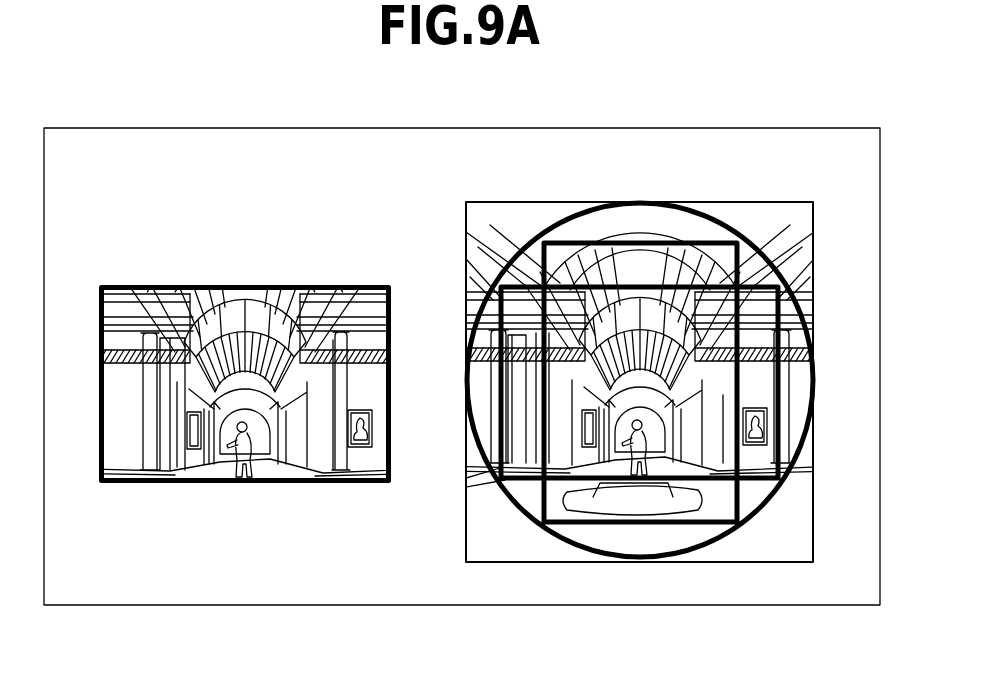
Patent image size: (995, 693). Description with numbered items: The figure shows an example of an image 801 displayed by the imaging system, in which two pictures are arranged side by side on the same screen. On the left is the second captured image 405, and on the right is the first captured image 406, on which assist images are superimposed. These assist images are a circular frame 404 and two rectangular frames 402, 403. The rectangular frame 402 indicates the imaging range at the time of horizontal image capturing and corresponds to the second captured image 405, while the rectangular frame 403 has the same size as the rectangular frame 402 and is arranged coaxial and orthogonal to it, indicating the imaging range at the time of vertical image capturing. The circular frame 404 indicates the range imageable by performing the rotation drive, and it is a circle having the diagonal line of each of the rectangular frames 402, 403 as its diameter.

The image 801 is at (445, 128).
The second captured image 405 is at (349, 285).
The first captured image 406 is at (762, 202).
The circular frame 404 is at (567, 557).
The rectangular frame 403 is at (705, 522).
The rectangular frame 402 is at (780, 442).